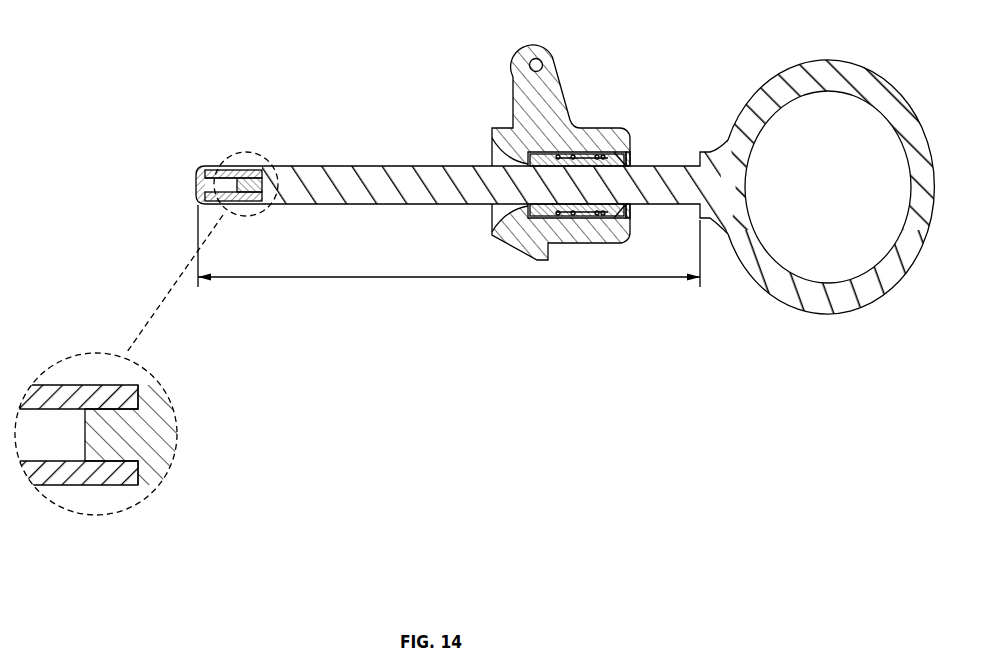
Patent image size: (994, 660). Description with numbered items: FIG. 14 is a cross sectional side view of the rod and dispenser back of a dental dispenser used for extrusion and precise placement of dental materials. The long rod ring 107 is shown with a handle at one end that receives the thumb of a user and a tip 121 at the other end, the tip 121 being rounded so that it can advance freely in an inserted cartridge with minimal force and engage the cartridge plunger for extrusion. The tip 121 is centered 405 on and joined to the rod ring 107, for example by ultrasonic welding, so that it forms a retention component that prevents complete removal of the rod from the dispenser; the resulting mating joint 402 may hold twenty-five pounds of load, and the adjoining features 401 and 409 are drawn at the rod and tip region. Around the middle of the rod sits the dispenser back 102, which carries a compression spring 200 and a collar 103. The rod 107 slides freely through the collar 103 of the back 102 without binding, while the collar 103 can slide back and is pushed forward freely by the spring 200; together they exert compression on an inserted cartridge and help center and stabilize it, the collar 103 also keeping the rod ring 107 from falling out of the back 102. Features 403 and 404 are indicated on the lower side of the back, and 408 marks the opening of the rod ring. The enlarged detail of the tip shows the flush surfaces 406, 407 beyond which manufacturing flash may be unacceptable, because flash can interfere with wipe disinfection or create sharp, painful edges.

The dispenser back 102 is at (513, 88).
The collar 103 is at (633, 158).
The rod ring 107 is at (797, 70).
The tip 121 is at (205, 166).
The compression spring 200 is at (577, 160).
The upper tip plate 401 is at (236, 164).
The mating joint 402 is at (247, 202).
The lower retaining wall 403 is at (610, 212).
The lower seal assembly 404 is at (575, 214).
The centered 405 is at (78, 385).
The flush 406 is at (66, 487).
The flush 407 is at (137, 487).
The ring opening 408 is at (745, 185).
The shaft 409 is at (333, 166).